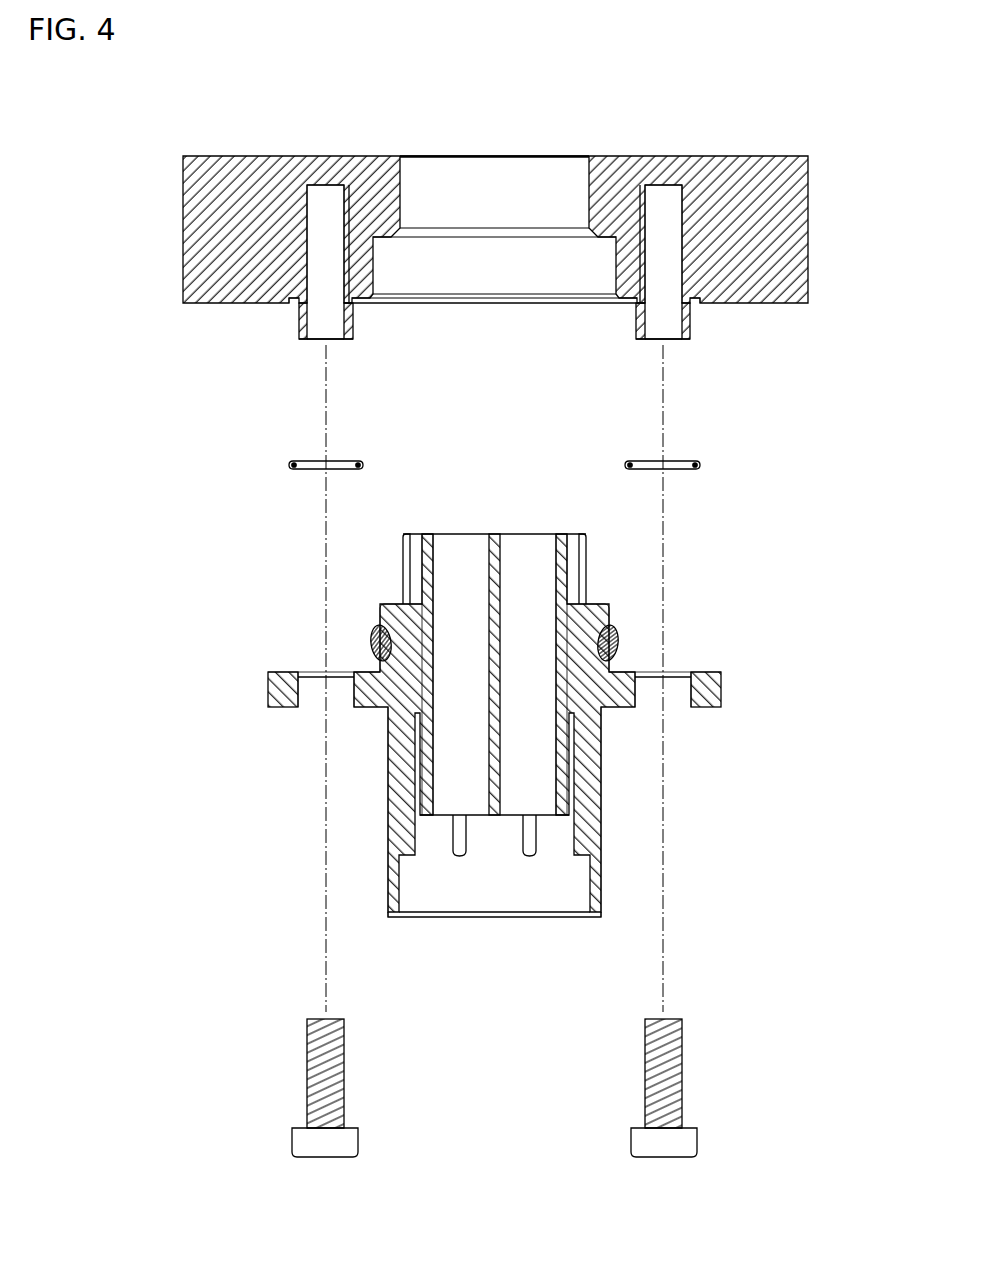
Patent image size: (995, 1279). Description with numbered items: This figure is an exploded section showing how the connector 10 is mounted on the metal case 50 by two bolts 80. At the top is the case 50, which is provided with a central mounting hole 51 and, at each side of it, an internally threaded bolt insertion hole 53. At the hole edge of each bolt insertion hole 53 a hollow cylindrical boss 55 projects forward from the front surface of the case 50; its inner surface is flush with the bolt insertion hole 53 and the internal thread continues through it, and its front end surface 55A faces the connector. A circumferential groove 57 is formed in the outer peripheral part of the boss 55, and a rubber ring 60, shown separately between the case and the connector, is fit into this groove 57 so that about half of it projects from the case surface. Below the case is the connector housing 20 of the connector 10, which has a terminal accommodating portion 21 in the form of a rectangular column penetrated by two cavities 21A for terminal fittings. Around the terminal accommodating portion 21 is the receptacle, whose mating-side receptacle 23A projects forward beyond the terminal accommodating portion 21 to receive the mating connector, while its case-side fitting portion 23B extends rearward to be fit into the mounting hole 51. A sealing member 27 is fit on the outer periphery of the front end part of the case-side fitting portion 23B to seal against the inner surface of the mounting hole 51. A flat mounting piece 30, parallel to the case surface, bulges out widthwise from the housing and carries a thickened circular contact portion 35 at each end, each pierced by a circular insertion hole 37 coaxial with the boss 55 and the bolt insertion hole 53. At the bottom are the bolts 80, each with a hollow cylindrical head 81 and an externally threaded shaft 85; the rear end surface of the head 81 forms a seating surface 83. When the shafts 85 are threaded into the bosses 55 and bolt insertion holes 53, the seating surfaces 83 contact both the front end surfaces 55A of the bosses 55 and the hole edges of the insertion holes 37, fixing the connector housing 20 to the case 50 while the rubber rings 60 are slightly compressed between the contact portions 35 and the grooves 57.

The connector 10 is at (558, 723).
The connector housing 20 is at (598, 606).
The terminal accommodating portion 21 is at (567, 782).
The cavities 21A is at (433, 568).
The mating-side receptacle 23A is at (388, 815).
The case-side fitting portion 23B is at (377, 612).
The sealing member 27 is at (372, 638).
The mounting piece 30 is at (703, 707).
The contact portions 35 is at (290, 672).
The insertion hole 37 is at (299, 690).
The case 50 is at (728, 156).
The mounting hole 51 is at (402, 202).
The bolt insertion hole 53 is at (310, 212).
The boss 55 is at (352, 322).
The front end surface 55A is at (345, 340).
The groove 57 is at (296, 305).
The rubber ring 60 is at (290, 464).
The bolt 80 is at (484, 1088).
The head 81 is at (358, 1140).
The seating surface 83 is at (306, 1128).
The shaft 85 is at (344, 1068).